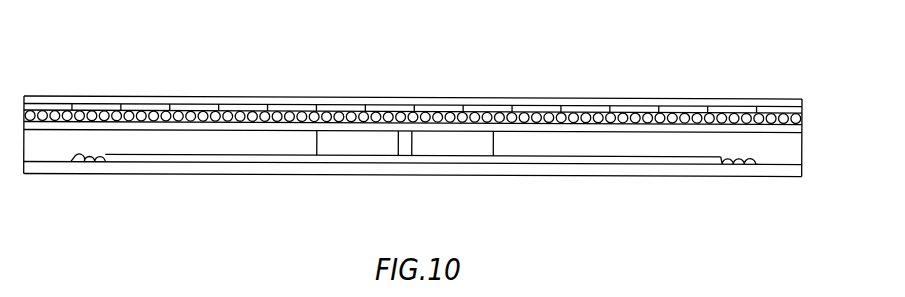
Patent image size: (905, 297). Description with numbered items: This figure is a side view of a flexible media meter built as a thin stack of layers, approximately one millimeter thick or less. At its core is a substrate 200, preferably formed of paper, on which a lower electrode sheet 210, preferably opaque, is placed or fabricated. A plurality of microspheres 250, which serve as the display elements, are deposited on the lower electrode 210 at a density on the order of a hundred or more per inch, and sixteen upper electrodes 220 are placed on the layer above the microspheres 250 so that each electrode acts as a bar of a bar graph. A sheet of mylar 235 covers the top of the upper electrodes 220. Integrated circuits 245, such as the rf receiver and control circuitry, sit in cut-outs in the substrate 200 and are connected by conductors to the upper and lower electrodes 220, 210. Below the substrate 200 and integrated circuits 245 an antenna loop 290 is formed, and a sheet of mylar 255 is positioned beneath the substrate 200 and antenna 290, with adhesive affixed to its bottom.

The sheet of mylar 235 is at (45, 96).
The microspheres 250 is at (246, 106).
The upper electrodes 220 is at (436, 102).
The lower electrode sheet 210 is at (527, 130).
The antenna loop 290 is at (221, 162).
The substrate 200 is at (283, 141).
The sheet of mylar 255 is at (103, 174).
The integrated circuits 245 is at (468, 146).